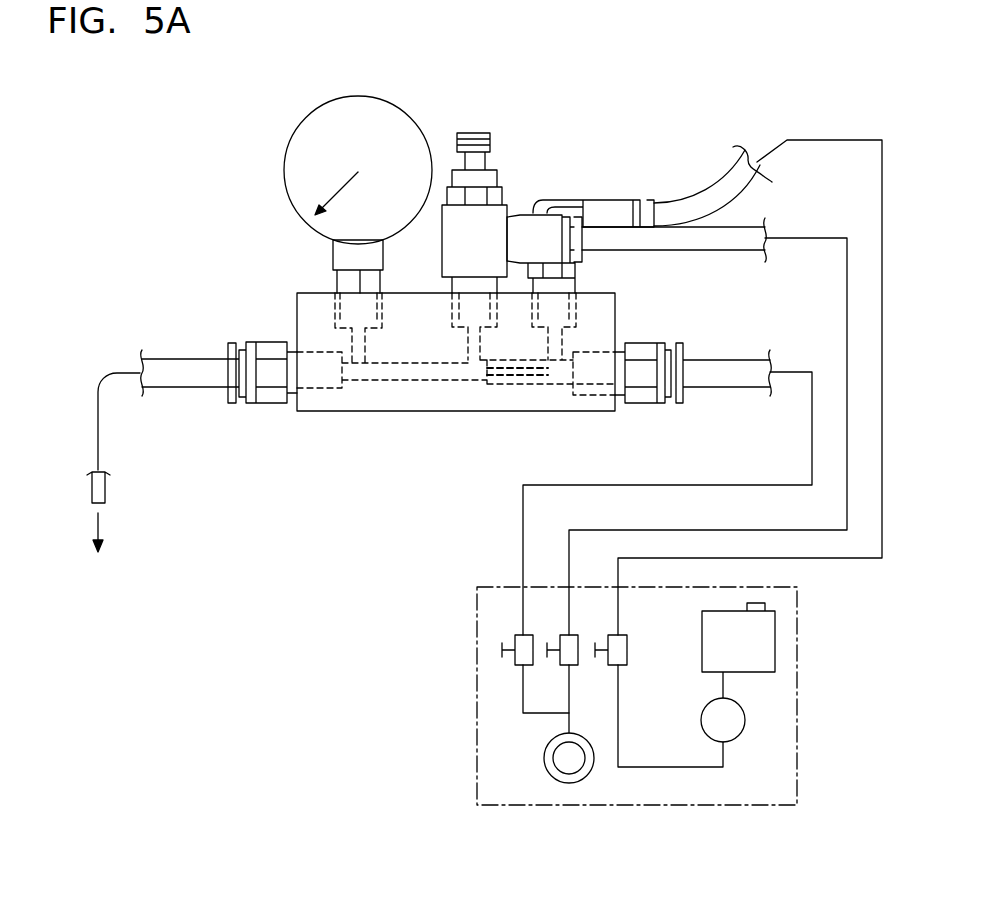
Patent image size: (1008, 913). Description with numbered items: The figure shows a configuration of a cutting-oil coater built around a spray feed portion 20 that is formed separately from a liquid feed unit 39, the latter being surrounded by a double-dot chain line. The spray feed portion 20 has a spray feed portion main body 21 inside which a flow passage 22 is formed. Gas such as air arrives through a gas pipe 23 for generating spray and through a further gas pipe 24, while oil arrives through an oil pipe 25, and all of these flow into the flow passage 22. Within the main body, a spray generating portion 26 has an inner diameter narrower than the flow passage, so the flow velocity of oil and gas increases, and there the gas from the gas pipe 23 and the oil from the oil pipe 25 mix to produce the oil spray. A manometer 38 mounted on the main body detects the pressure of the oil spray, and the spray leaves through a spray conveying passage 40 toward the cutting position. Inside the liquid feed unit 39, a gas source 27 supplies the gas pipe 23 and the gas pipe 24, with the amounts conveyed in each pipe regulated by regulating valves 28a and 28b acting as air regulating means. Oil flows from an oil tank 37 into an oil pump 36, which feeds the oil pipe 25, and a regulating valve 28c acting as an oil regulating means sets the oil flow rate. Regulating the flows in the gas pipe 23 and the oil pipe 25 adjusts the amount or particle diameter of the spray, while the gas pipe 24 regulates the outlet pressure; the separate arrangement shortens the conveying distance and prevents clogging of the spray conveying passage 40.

The spray feed portion 20 is at (283, 482).
The spray feed portion main body 21 is at (350, 412).
The flow passage 22 is at (438, 382).
The gas pipe for generating spray 23 is at (705, 360).
The gas pipe 24 is at (712, 235).
The oil pipe 25 is at (727, 200).
The spray generating portion 26 is at (502, 380).
The gas source 27 is at (567, 783).
The regulating valve 28a is at (523, 645).
The regulating valve 28b is at (570, 638).
The regulating valve 28c is at (618, 638).
The oil pump 36 is at (745, 720).
The oil tank 37 is at (775, 640).
The manometer 38 is at (372, 98).
The liquid feed unit 39 is at (735, 805).
The spray conveying passage 40 is at (163, 360).